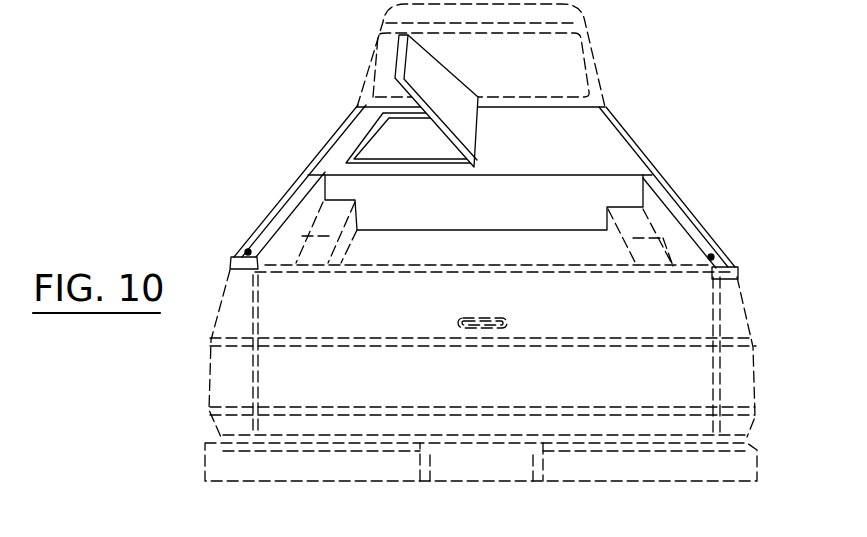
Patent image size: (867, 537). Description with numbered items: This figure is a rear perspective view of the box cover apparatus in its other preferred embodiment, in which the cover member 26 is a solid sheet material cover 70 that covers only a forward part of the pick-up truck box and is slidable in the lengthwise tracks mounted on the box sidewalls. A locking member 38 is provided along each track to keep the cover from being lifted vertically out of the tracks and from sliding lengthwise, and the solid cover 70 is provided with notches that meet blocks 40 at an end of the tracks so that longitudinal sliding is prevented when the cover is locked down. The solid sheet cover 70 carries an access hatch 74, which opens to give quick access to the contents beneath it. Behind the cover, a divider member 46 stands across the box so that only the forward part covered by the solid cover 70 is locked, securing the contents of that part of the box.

The cover member 26 is at (598, 131).
The locking member 38 is at (643, 152).
The blocks 40 is at (248, 251).
The divider member 46 is at (479, 215).
The solid sheet material cover 70 is at (550, 154).
The access hatch 74 is at (444, 100).